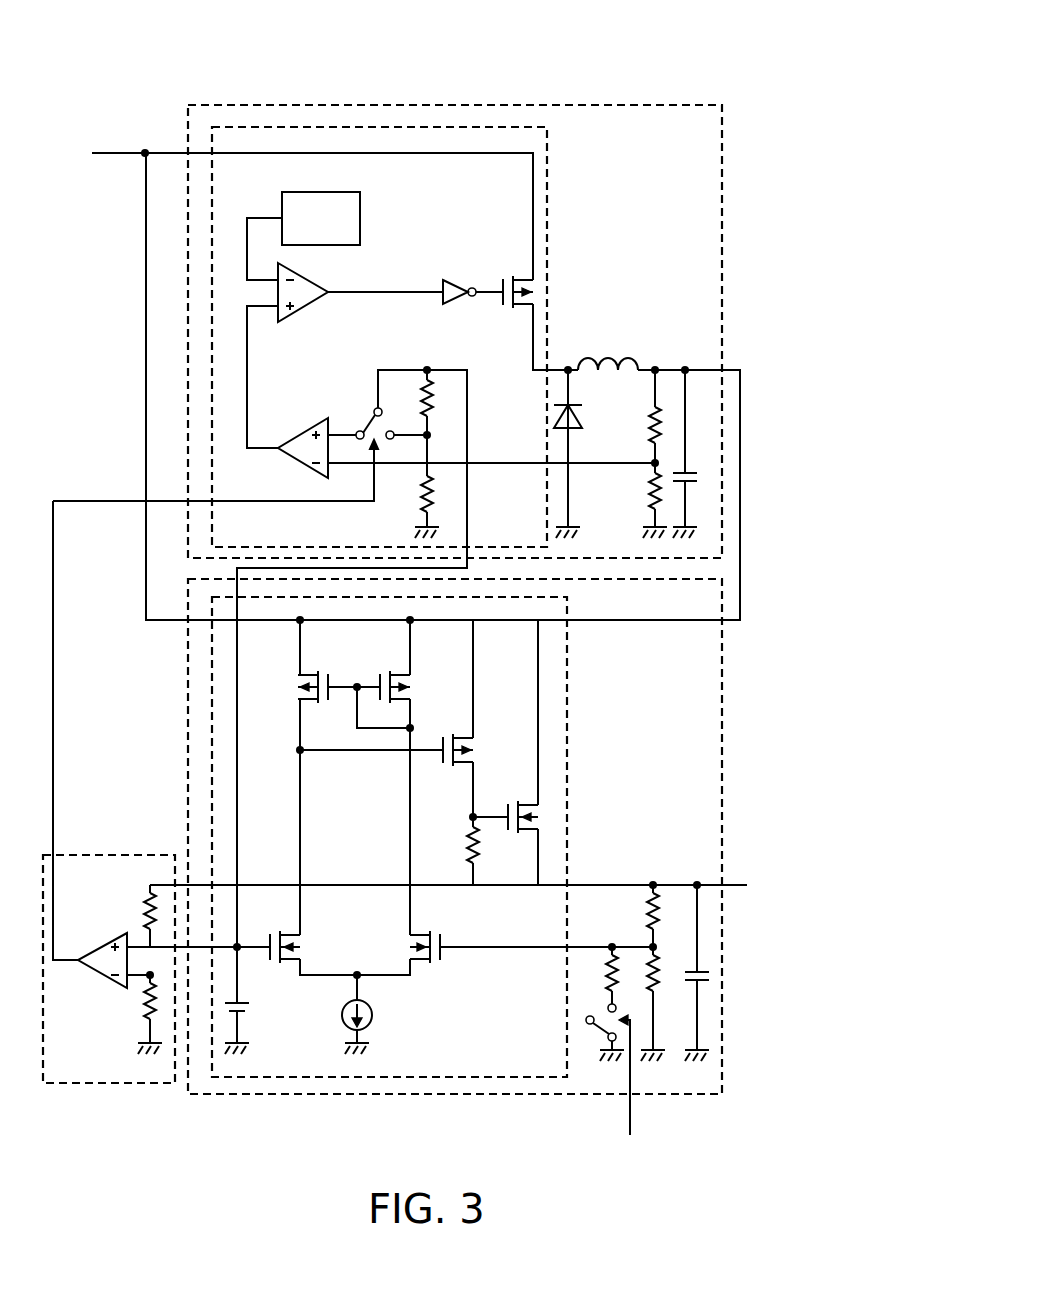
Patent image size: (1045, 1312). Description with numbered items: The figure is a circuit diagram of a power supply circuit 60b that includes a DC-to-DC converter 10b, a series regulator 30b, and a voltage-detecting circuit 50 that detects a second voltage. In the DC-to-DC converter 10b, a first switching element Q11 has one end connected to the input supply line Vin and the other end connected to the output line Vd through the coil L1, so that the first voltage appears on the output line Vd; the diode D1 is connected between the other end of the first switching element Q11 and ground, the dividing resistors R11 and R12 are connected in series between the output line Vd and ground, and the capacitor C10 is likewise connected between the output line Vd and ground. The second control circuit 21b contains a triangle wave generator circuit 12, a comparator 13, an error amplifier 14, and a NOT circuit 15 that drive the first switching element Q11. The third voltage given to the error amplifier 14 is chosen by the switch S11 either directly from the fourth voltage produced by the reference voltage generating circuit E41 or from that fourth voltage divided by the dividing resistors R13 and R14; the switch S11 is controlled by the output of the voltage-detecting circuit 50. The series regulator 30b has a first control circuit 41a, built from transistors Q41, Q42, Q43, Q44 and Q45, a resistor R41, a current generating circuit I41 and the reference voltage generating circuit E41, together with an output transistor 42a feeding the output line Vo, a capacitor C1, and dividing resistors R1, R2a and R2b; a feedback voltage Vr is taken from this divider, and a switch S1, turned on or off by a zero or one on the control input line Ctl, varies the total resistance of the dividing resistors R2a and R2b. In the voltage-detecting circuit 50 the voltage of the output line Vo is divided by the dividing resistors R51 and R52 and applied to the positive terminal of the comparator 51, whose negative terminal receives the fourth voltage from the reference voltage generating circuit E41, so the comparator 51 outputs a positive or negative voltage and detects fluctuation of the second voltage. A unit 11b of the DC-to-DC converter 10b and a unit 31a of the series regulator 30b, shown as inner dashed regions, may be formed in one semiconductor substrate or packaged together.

The power supply circuit 60b is at (724, 60).
The second control circuit 21b is at (418, 87).
The unit 11b is at (483, 127).
The DC-to-DC converter 10b is at (577, 105).
The input supply line Vin is at (108, 153).
The triangle wave generator circuit 12 is at (360, 218).
The comparator 13 is at (313, 283).
The NOT circuit 15 is at (455, 280).
The first switching element Q11 is at (507, 277).
The error amplifier 14 is at (306, 430).
The switch S11 is at (370, 409).
The dividing resistor R13 is at (433, 397).
The dividing resistor R14 is at (433, 492).
The coil L1 is at (617, 358).
The diode D1 is at (584, 415).
The dividing resistor R11 is at (660, 416).
The dividing resistor R12 is at (660, 480).
The capacitor C10 is at (699, 477).
The output line Vd is at (741, 582).
The transistor Q43 is at (302, 690).
The transistor Q44 is at (413, 693).
The transistor Q45 is at (446, 766).
The output transistor 42a is at (544, 815).
The resistor R41 is at (469, 838).
The output line Vo is at (733, 885).
The feedback voltage Vr is at (612, 942).
The dividing resistor R51 is at (144, 912).
The comparator 51 is at (98, 976).
The dividing resistor R52 is at (143, 1025).
The transistor Q41 is at (301, 946).
The transistor Q42 is at (412, 946).
The reference voltage generating circuit E41 is at (251, 1005).
The current generating circuit I41 is at (374, 1013).
The dividing resistor R1 is at (661, 906).
The capacitor C1 is at (710, 976).
The dividing resistor R2a is at (662, 986).
The dividing resistor R2b is at (620, 988).
The switch S1 is at (594, 1032).
The control input line Ctl is at (631, 1115).
The voltage-detecting circuit 50 is at (122, 1083).
The first control circuit 41a is at (478, 1106).
The unit 31a is at (510, 1077).
The series regulator 30b is at (702, 1094).